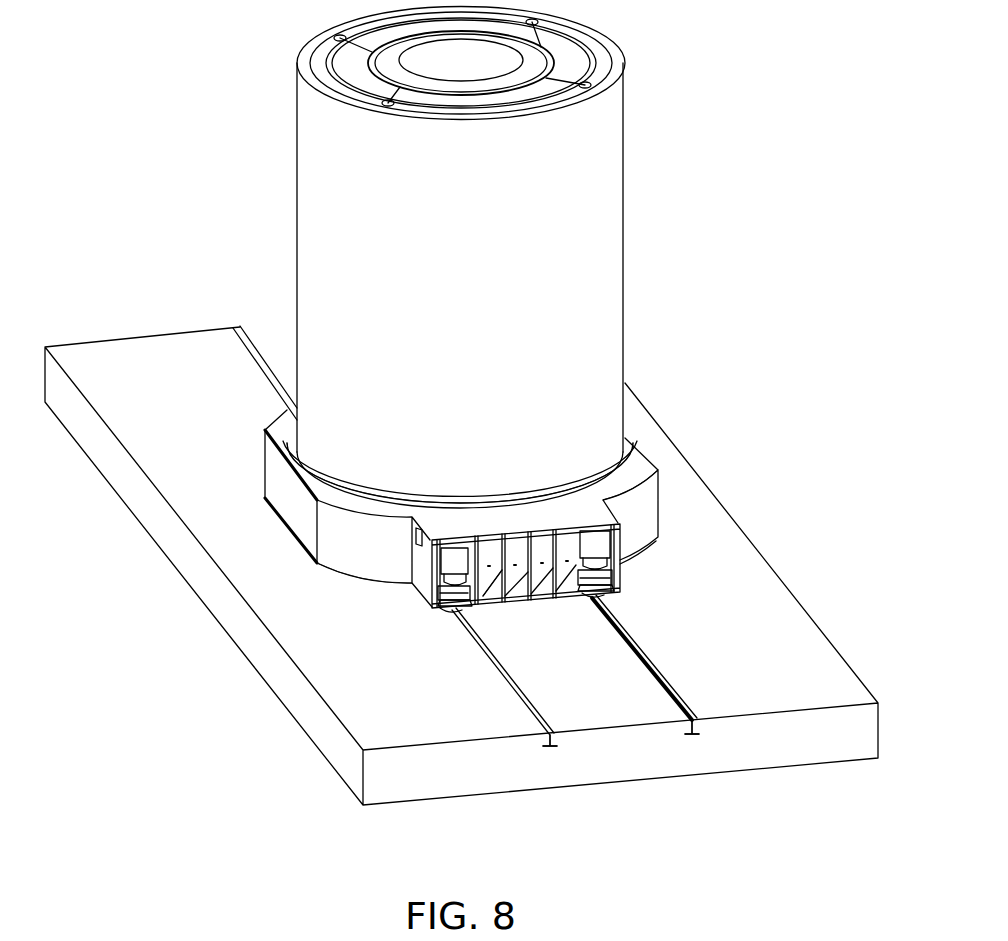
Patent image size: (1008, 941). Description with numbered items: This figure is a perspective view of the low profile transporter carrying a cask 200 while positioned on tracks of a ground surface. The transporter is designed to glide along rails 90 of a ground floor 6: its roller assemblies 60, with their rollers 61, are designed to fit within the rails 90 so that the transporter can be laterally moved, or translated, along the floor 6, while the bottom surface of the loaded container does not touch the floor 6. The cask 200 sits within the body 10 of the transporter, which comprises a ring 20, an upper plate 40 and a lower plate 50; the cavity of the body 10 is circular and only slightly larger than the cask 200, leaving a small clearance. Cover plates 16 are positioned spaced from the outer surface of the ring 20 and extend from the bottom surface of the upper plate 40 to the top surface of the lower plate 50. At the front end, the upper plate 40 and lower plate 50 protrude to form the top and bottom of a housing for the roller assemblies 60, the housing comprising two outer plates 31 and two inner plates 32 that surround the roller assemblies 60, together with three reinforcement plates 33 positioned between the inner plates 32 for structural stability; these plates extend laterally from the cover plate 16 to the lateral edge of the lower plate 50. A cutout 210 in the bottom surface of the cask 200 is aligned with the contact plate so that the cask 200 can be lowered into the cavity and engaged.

The cask 200 is at (580, 247).
The ring 20 is at (625, 432).
The body 10 is at (653, 452).
The cutout 210 is at (668, 488).
The roller assemblies 60 is at (603, 545).
The rollers 61 is at (597, 605).
The ground floor 6 is at (812, 658).
The rails 90 is at (697, 717).
The inner plates 32 is at (570, 600).
The reinforcement plates 33 is at (517, 605).
The outer plates 31 is at (452, 612).
The lower plate 50 is at (317, 563).
The cover plates 16 is at (293, 500).
The upper plate 40 is at (325, 495).